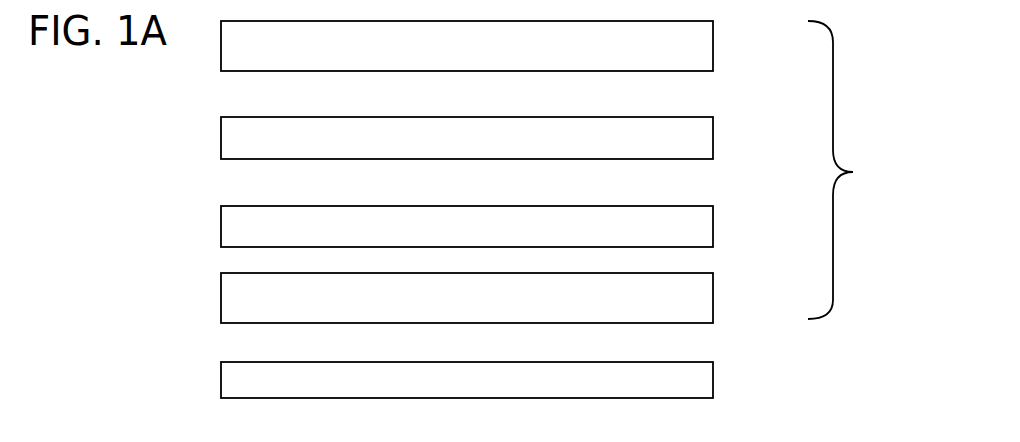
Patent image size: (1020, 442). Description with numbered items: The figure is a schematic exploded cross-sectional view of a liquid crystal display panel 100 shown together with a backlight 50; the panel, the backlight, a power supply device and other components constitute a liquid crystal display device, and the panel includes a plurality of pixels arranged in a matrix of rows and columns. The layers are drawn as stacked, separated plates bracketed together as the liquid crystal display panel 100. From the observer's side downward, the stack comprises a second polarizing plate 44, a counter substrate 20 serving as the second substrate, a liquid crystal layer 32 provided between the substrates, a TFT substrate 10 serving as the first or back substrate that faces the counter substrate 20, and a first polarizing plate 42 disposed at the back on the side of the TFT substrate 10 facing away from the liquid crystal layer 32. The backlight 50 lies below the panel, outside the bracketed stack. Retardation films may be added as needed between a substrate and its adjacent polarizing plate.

The second polarizing plate 44 is at (701, 46).
The counter substrate 20 is at (701, 135).
The liquid crystal layer 32 is at (498, 194).
The TFT substrate 10 is at (701, 226).
The first polarizing plate 42 is at (701, 293).
The backlight 50 is at (701, 383).
The liquid crystal display panel 100 is at (853, 170).